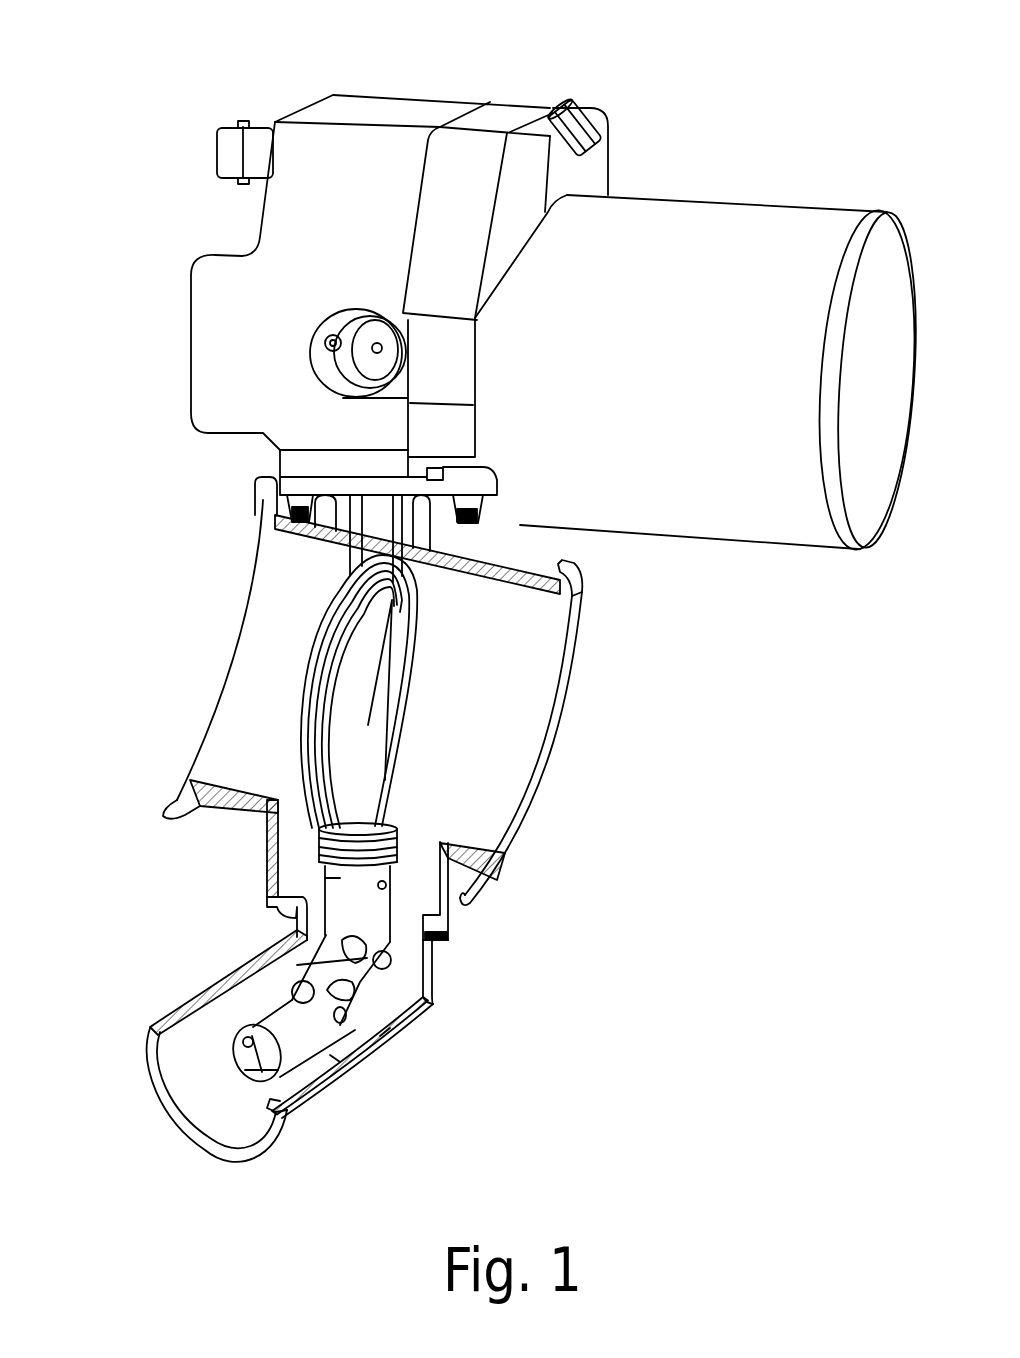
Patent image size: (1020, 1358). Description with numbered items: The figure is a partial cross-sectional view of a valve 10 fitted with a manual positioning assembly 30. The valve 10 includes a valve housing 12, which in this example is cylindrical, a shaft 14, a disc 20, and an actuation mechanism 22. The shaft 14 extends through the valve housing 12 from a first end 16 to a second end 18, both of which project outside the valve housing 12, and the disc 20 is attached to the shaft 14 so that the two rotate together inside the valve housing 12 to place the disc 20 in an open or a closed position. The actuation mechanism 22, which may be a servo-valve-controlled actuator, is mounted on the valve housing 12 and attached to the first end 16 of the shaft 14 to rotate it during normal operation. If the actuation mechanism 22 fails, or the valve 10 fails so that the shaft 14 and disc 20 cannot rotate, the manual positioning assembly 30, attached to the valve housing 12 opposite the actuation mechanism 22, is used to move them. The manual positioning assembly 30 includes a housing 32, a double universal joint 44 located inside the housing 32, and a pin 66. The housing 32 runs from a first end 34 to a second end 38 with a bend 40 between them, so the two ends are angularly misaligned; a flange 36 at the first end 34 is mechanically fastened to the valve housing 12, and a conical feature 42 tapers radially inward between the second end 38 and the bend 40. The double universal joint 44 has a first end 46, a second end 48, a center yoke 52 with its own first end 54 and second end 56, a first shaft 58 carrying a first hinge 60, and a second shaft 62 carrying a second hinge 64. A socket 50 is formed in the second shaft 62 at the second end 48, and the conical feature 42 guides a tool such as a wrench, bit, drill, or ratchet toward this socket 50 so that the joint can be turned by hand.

The valve 10 is at (820, 111).
The valve housing 12 is at (585, 593).
The shaft 14 is at (377, 515).
The first end 16 is at (377, 492).
The second end 18 is at (397, 860).
The disc 20 is at (405, 635).
The actuation mechanism 22 is at (626, 346).
The manual positioning assembly 30 is at (300, 924).
The housing 32 is at (357, 1068).
The first end 34 is at (390, 934).
The flange 36 is at (295, 906).
The second end 38 is at (253, 1147).
The bend 40 is at (430, 1005).
The conical feature 42 is at (228, 1112).
The double universal joint 44 is at (300, 972).
The first end 46 is at (337, 862).
The second end 48 is at (233, 1058).
The socket 50 is at (302, 1043).
The center yoke 52 is at (358, 978).
The first end 54 is at (390, 944).
The second end 56 is at (378, 1034).
The first shaft 58 is at (340, 878).
The first hinge 60 is at (368, 954).
The second shaft 62 is at (335, 1058).
The second hinge 64 is at (333, 1017).
The pin 66 is at (388, 888).